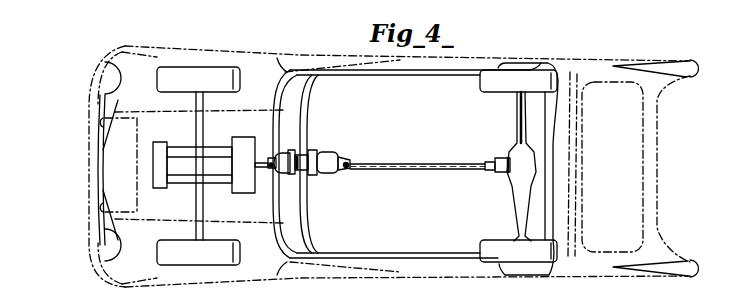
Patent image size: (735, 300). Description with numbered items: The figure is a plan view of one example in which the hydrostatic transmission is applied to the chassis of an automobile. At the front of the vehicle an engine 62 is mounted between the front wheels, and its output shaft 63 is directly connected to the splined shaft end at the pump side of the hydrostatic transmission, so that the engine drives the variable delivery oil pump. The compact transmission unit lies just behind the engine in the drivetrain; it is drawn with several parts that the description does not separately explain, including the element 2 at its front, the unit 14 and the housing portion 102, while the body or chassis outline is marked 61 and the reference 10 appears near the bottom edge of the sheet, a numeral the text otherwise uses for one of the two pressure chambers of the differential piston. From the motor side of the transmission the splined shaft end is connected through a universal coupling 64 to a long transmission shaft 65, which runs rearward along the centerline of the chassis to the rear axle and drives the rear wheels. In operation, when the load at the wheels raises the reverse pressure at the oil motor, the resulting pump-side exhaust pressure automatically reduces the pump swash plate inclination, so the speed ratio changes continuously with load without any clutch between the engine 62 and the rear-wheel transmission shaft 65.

The vehicle body 61 is at (313, 60).
The chamber 10 is at (407, 288).
The engine 62 is at (180, 157).
The output shaft 63 is at (258, 146).
The coupling member 2 is at (282, 178).
The torque transmitting coupling 14 is at (305, 156).
The cylindrical housing 102 is at (325, 175).
The universal coupling 64 is at (343, 160).
The transmission shaft 65 is at (430, 169).